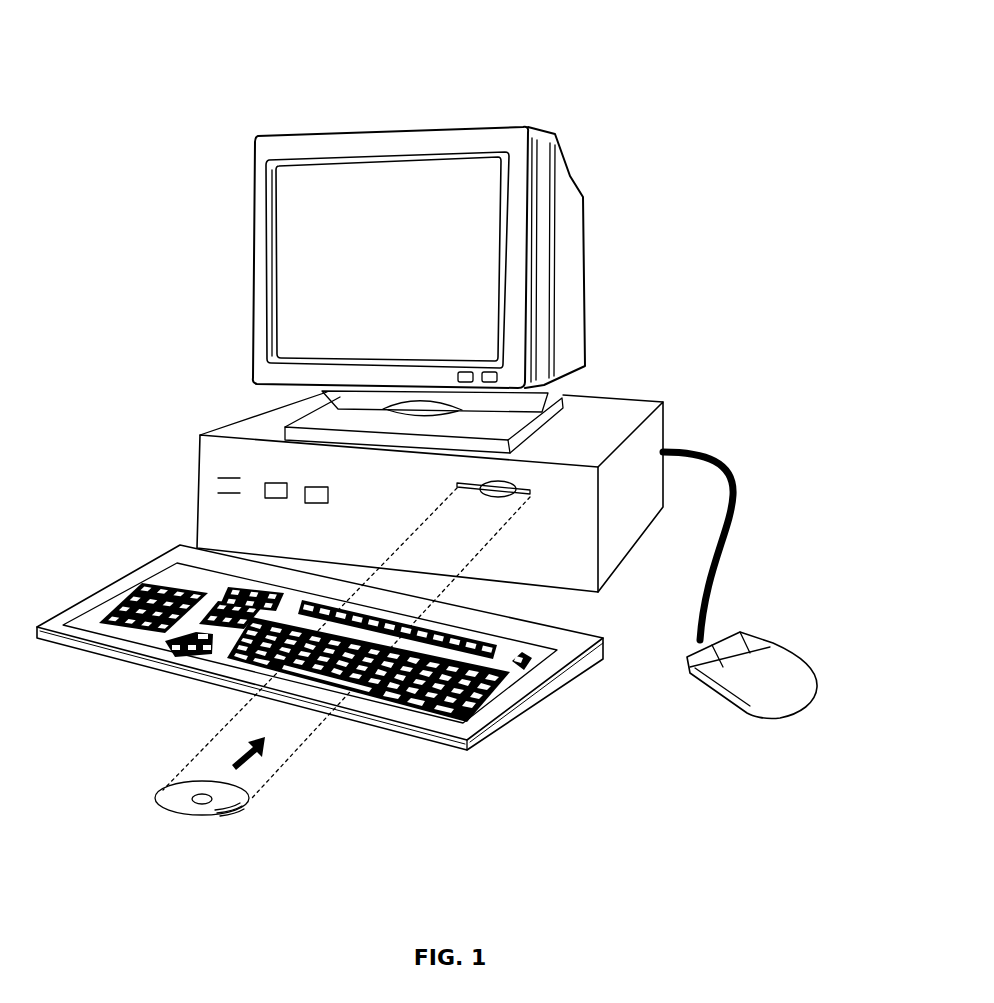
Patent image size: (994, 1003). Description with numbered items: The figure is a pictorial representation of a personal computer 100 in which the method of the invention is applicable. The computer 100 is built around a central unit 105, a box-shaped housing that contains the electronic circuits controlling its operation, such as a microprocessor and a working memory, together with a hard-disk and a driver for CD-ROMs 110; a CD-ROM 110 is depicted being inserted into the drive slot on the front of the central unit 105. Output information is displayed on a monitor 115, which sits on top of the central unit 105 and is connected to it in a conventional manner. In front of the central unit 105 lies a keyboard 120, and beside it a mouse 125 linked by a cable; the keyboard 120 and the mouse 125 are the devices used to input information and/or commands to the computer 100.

The personal computer 100 is at (722, 101).
The central unit 105 is at (658, 422).
The CD-ROM 110 is at (228, 815).
The monitor 115 is at (253, 248).
The keyboard 120 is at (550, 692).
The mouse 125 is at (788, 670).